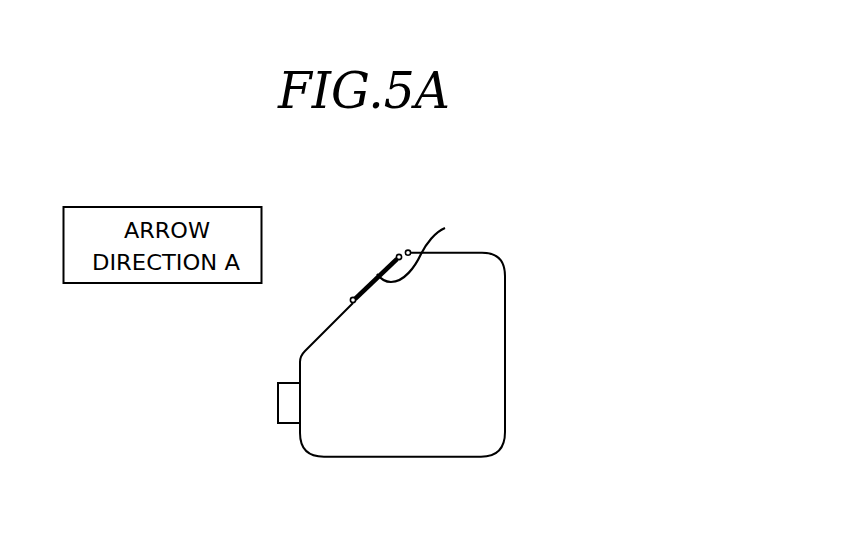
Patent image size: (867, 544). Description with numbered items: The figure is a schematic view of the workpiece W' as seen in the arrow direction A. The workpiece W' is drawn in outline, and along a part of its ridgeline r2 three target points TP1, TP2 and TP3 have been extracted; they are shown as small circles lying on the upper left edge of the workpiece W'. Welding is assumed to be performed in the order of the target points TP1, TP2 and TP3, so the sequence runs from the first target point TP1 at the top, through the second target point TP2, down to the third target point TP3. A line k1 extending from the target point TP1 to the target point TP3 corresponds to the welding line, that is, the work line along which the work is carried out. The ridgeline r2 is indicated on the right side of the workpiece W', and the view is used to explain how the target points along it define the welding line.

The target point TP1 is at (407, 250).
The target point TP2 is at (396, 257).
The target point TP3 is at (351, 299).
The line k1 is at (427, 247).
The workpiece W' is at (427, 335).
The ridgeline r2 is at (506, 383).